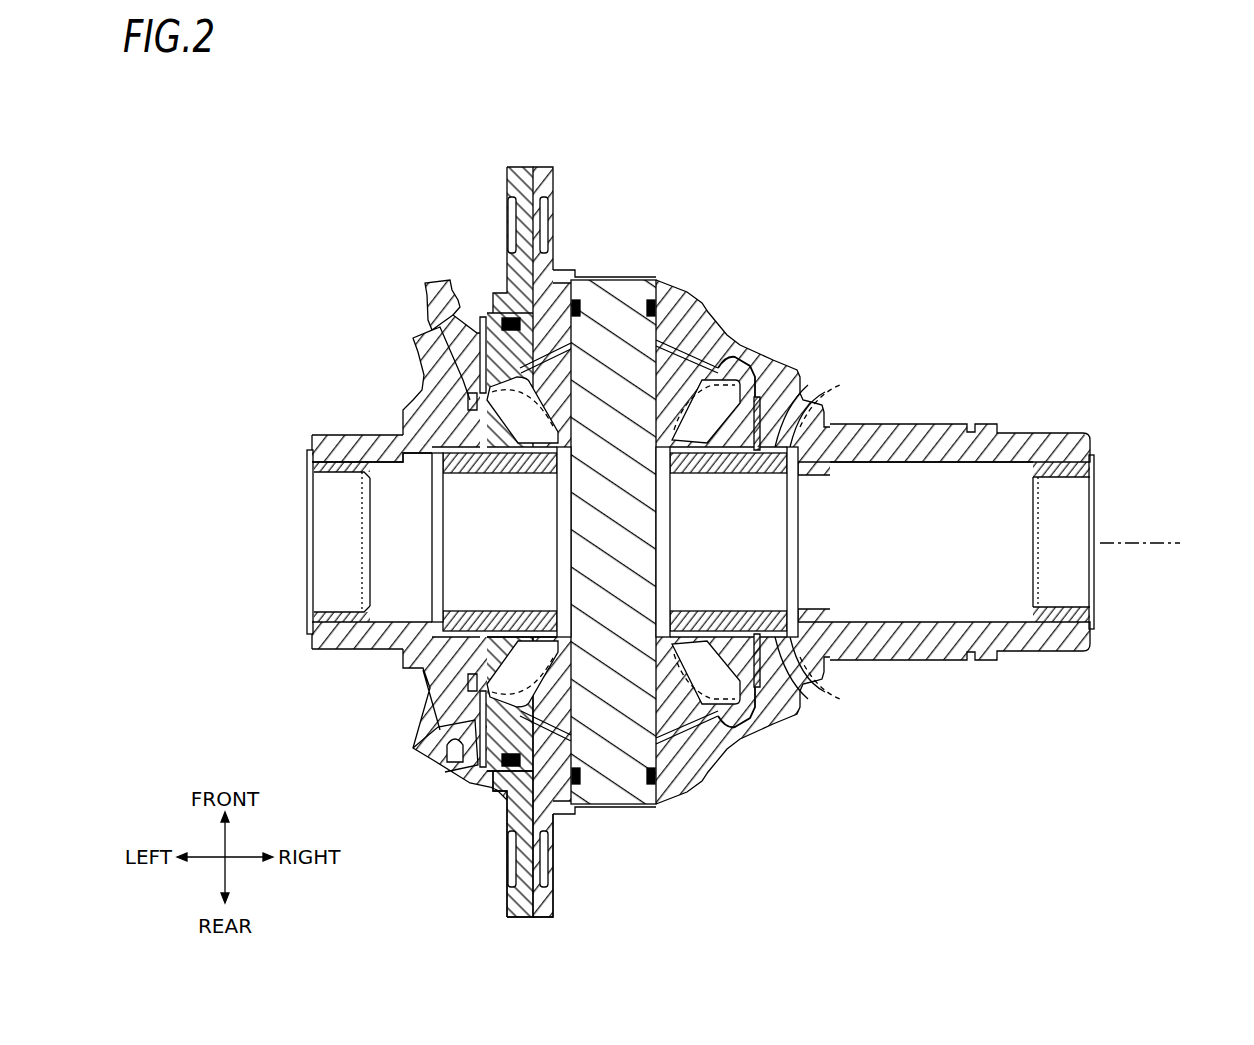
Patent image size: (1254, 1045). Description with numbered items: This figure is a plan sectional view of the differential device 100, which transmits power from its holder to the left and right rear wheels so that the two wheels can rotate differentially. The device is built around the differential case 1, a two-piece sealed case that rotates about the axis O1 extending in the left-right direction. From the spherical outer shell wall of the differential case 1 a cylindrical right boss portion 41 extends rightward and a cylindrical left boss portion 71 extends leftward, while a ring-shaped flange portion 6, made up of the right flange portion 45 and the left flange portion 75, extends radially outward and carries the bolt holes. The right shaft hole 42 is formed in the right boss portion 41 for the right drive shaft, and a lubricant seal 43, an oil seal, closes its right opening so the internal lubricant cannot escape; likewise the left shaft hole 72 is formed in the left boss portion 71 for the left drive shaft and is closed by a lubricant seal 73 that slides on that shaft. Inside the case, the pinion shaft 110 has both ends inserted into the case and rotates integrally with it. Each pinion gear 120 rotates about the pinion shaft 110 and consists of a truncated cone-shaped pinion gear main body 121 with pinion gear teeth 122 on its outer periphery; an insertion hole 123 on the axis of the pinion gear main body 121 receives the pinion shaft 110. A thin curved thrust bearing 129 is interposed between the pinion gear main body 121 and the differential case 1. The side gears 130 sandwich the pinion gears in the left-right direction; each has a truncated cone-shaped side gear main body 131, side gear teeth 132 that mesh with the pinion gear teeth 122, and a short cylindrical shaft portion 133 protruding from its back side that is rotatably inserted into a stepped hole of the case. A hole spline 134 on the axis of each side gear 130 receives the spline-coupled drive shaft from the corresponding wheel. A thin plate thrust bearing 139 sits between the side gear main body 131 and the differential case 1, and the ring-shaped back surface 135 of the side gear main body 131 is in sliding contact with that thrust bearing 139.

The differential device 100 is at (627, 522).
The differential case 1 is at (500, 812).
The flange portion 6 is at (529, 501).
The left flange portion 75 is at (515, 170).
The right flange portion 45 is at (552, 522).
The left boss portion 71 is at (321, 434).
The left shaft hole 72 is at (403, 464).
The lubricant seal 73 is at (308, 480).
The right boss portion 41 is at (1037, 653).
The right shaft hole 42 is at (977, 625).
The lubricant seal 43 is at (1052, 620).
The pinion shaft 110 is at (607, 814).
The pinion gear 120 is at (651, 547).
The pinion gear main body 121 is at (715, 398).
The pinion gear teeth 122 is at (748, 400).
The insertion hole 123 is at (633, 355).
The thrust bearing 129 is at (662, 345).
The side gear 130 is at (607, 547).
The side gear main body 131 is at (802, 400).
The side gear teeth 132 is at (790, 372).
The shaft portion 133 is at (815, 440).
The hole spline 134 is at (500, 612).
The back surface 135 is at (468, 418).
The thrust bearing 139 is at (468, 435).
The axis O1 is at (1160, 543).